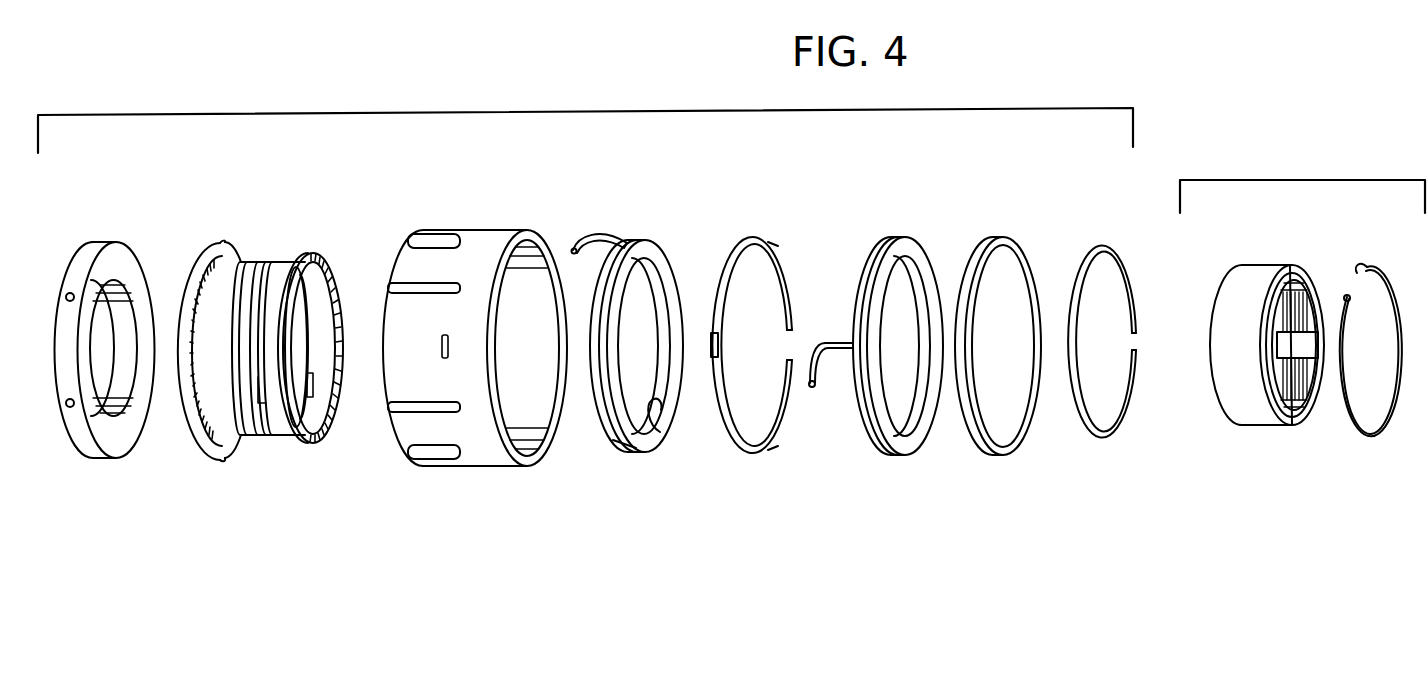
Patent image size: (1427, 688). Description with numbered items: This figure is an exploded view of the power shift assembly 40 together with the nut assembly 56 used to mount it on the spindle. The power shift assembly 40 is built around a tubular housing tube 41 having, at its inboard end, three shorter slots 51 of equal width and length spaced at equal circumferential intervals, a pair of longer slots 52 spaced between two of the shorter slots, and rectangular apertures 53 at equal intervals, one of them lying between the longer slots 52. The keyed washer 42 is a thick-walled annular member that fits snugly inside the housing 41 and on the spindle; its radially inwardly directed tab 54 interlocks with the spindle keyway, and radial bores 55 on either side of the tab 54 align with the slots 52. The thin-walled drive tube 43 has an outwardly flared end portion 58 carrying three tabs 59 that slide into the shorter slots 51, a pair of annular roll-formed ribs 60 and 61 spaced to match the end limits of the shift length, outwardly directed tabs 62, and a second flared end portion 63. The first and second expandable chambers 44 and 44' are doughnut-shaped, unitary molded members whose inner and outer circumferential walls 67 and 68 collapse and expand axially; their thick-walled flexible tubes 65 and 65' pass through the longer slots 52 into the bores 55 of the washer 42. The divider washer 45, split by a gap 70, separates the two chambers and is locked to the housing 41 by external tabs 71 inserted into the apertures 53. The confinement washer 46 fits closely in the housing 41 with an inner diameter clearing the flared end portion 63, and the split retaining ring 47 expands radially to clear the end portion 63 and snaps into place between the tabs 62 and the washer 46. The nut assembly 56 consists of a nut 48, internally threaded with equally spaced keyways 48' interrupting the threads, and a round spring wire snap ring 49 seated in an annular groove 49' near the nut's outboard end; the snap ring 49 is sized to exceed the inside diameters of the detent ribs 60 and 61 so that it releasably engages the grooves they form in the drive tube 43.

The power shift assembly 40 is at (588, 113).
The housing tube 41 is at (462, 347).
The keyed washer 42 is at (103, 350).
The drive tube 43 is at (251, 352).
The first expandable chamber 44 is at (615, 340).
The second expandable chamber 44' is at (876, 330).
The divider washer 45 is at (777, 325).
The confinement washer 46 is at (1003, 238).
The retaining ring 47 is at (1100, 250).
The nut 48 is at (1260, 367).
The keyways 48' is at (1303, 282).
The snap ring 49 is at (1361, 390).
The annular groove 49' is at (1273, 397).
The shorter slots 51 is at (430, 243).
The longer slots 52 is at (422, 287).
The rectangular apertures 53 is at (449, 347).
The tab 54 is at (95, 350).
The radial bores 55 is at (70, 406).
The nut assembly 56 is at (1302, 180).
The outwardly flared end portion 58 is at (200, 339).
The tabs 59 is at (196, 250).
The rib 60 is at (236, 437).
The rib 61 is at (255, 437).
The tabs 62 is at (277, 437).
The outwardly flared end portion 63 is at (322, 260).
The flexible tube 65 is at (587, 205).
The flexible tube 65' is at (843, 426).
The inner circumferential wall 67 is at (661, 432).
The outer circumferential wall 68 is at (613, 441).
The gap 70 is at (786, 343).
The external tabs 71 is at (778, 250).